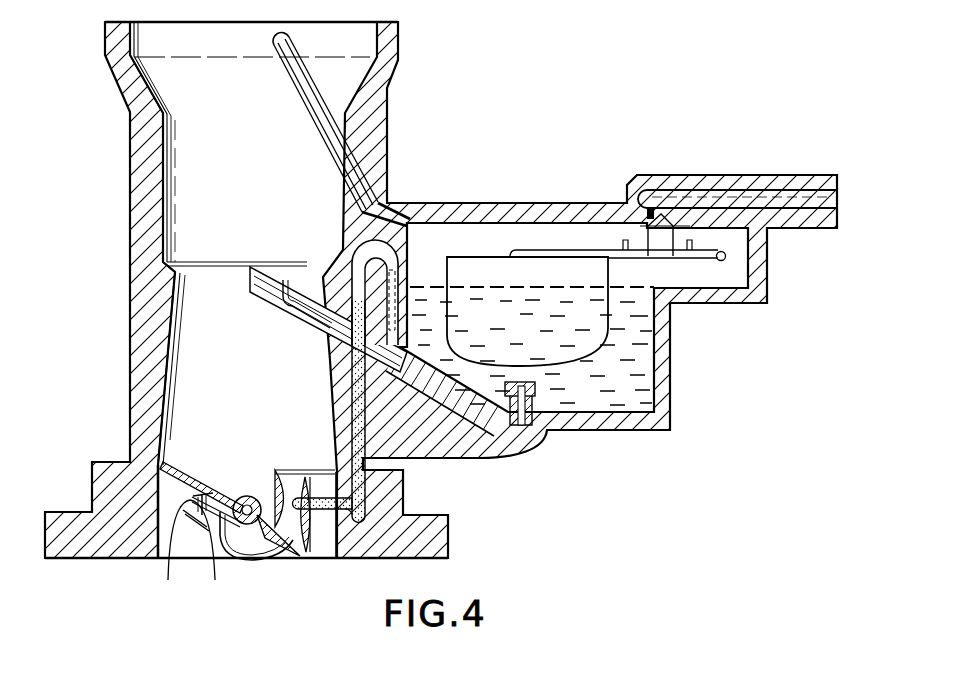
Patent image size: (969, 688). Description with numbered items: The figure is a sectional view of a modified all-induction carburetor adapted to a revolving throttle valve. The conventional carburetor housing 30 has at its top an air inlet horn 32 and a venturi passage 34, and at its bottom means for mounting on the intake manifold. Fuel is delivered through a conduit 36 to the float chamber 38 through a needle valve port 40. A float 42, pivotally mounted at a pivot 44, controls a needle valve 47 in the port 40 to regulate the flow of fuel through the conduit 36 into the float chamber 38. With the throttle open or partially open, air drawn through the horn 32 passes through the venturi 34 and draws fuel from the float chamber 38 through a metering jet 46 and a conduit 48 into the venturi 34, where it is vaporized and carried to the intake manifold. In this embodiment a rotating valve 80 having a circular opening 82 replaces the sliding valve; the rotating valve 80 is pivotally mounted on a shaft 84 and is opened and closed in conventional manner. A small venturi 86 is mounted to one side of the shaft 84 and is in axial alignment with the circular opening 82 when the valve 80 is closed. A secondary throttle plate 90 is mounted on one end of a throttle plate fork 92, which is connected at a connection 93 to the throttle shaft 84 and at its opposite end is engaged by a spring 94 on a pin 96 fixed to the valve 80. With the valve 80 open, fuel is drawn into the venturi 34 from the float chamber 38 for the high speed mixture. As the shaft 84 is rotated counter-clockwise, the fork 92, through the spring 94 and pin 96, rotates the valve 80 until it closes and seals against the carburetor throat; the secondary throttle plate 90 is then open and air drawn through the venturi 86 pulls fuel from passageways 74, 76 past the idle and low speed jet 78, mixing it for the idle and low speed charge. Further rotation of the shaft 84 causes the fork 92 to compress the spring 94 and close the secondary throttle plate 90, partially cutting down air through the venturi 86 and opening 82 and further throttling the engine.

The carburetor housing 30 is at (385, 117).
The air inlet horn 32 is at (150, 91).
The venturi passage 34 is at (187, 355).
The conduit 36 is at (762, 178).
The float chamber 38 is at (535, 235).
The needle valve port 40 is at (660, 226).
The float 42 is at (600, 330).
The float pivot 44 is at (726, 257).
The metering jet 46 is at (533, 418).
The needle valve 47 is at (665, 240).
The conduit 48 is at (306, 306).
The conduit 74 is at (340, 530).
The conduit 76 is at (360, 377).
The idle and low speed jet 78 is at (410, 263).
The rotating valve 80 is at (208, 468).
The circular opening 82 is at (300, 556).
The shaft 84 is at (250, 498).
The venturi 86 is at (284, 467).
The secondary throttle plate 90 is at (291, 548).
The throttle plate fork 92 is at (233, 556).
The fork connection 93 is at (252, 525).
The spring 94 is at (168, 580).
The pin 96 is at (212, 535).